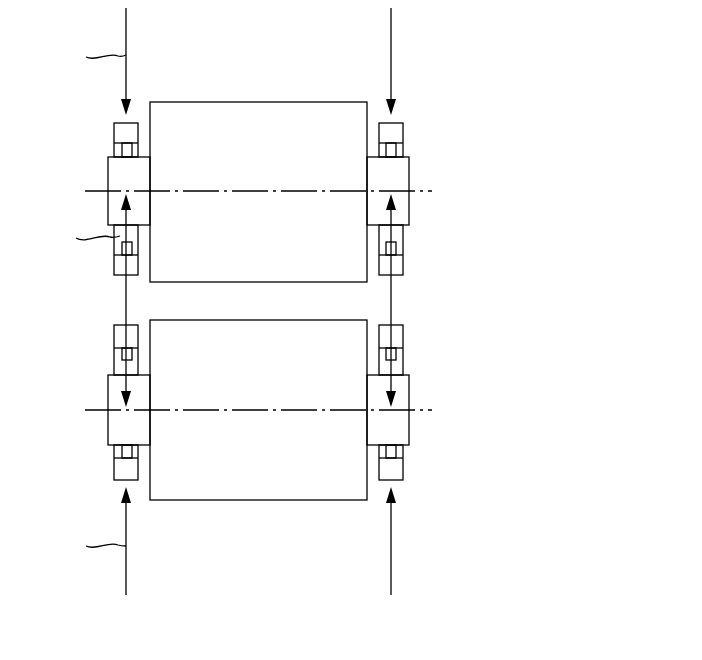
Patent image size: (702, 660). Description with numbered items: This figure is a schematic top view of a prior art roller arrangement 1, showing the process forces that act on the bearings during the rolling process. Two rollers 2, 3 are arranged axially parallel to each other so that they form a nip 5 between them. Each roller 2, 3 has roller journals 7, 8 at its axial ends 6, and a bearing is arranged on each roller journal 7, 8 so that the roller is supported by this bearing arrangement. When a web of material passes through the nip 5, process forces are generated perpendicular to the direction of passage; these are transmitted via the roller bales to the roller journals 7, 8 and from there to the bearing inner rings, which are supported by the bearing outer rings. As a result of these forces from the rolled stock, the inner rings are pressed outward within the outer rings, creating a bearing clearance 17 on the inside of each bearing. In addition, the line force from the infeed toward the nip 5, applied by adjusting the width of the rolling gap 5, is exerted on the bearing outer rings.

The roller arrangement 1 is at (505, 72).
The roller 2 is at (255, 128).
The roller 3 is at (255, 475).
The nip 5 is at (158, 301).
The axial ends 6 is at (258, 301).
The roller journal 7 is at (405, 168).
The roller journal 8 is at (118, 168).
The bearing clearance 17 is at (393, 233).